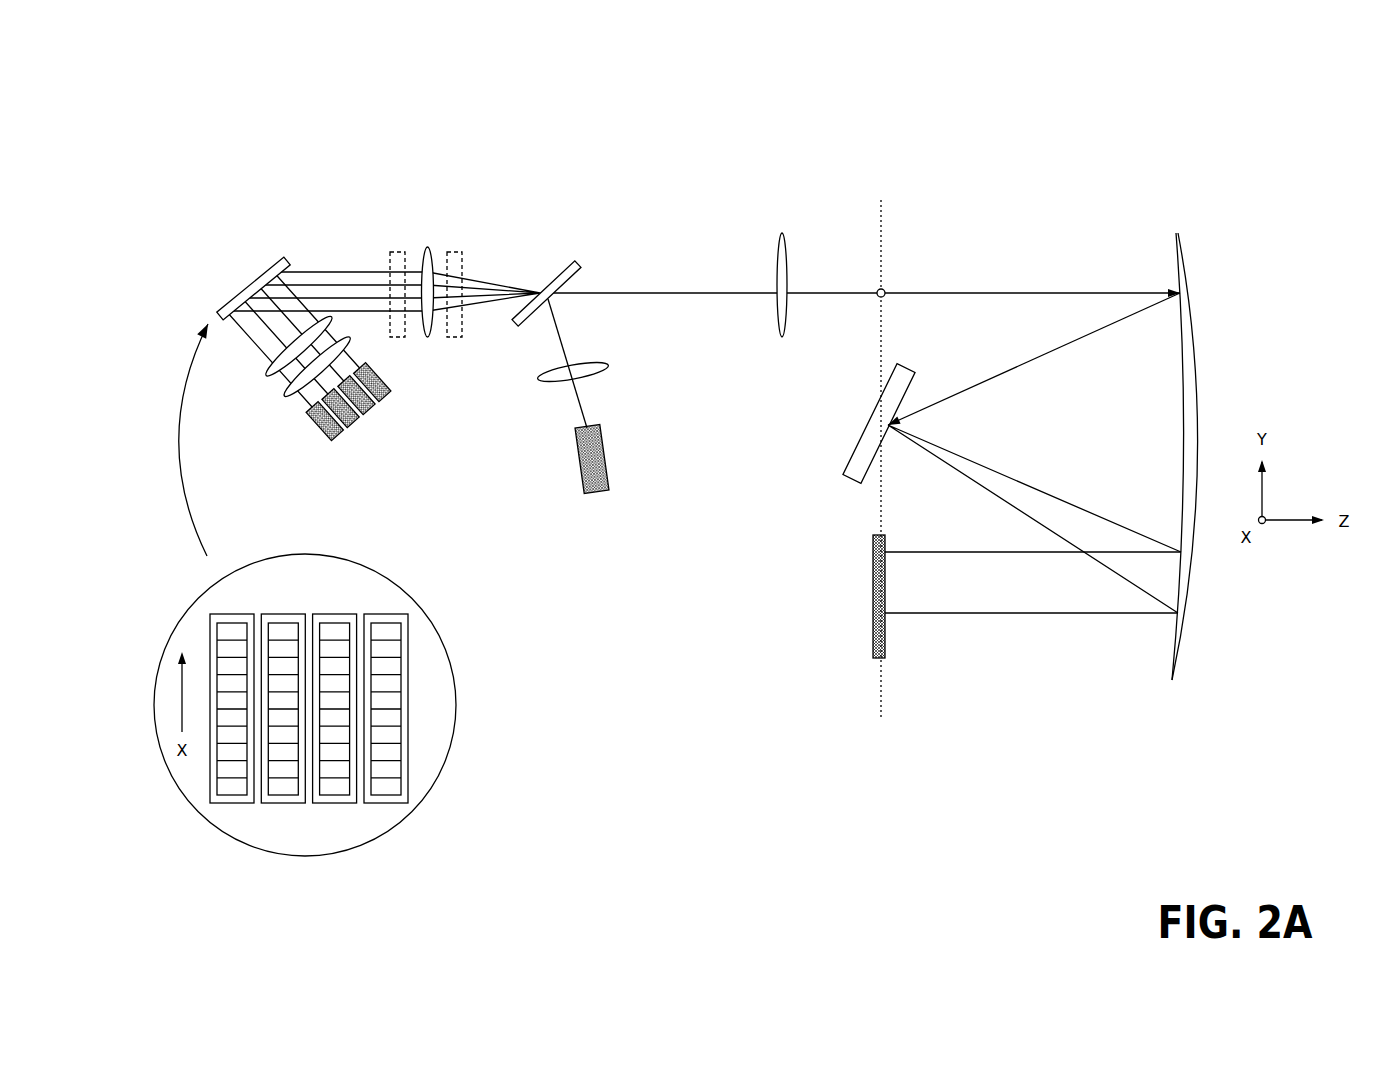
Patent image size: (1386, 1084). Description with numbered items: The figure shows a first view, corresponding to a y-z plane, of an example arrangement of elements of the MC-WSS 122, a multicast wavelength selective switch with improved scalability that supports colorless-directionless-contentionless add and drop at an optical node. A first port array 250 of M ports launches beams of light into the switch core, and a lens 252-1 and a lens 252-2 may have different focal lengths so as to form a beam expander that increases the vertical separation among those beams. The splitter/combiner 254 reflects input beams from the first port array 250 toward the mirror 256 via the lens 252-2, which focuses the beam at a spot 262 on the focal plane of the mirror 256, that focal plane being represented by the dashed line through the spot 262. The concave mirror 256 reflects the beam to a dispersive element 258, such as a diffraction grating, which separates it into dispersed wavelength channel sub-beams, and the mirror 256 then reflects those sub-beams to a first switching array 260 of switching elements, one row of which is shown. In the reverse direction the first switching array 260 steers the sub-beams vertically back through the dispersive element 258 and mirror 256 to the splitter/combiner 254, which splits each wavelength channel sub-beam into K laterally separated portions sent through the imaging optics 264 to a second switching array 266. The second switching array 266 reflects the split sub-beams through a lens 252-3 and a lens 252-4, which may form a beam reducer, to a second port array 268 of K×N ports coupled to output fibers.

The MC-WSS 122 is at (236, 70).
The first port array 250 is at (584, 485).
The lens 252-1 is at (557, 383).
The lens 252-2 is at (782, 232).
The lens 252-3 is at (253, 378).
The lens 252-4 is at (288, 402).
The splitter/combiner 254 is at (582, 258).
The mirror 256 is at (1195, 347).
The dispersive element 258 is at (850, 482).
The first switching array 260 is at (872, 577).
The spot 262 is at (883, 287).
The imaging optics 264 is at (382, 238).
The second switching array 266 is at (251, 263).
The second port array 268 is at (372, 422).